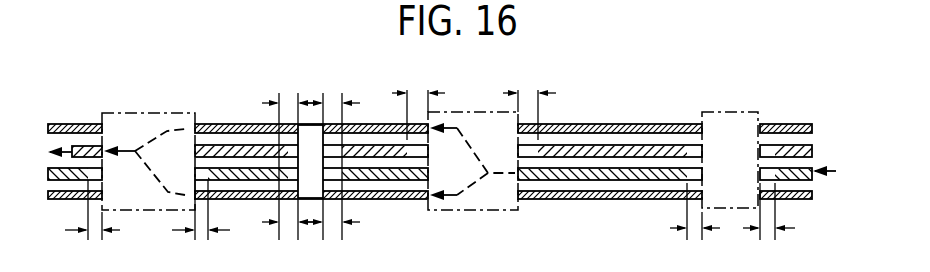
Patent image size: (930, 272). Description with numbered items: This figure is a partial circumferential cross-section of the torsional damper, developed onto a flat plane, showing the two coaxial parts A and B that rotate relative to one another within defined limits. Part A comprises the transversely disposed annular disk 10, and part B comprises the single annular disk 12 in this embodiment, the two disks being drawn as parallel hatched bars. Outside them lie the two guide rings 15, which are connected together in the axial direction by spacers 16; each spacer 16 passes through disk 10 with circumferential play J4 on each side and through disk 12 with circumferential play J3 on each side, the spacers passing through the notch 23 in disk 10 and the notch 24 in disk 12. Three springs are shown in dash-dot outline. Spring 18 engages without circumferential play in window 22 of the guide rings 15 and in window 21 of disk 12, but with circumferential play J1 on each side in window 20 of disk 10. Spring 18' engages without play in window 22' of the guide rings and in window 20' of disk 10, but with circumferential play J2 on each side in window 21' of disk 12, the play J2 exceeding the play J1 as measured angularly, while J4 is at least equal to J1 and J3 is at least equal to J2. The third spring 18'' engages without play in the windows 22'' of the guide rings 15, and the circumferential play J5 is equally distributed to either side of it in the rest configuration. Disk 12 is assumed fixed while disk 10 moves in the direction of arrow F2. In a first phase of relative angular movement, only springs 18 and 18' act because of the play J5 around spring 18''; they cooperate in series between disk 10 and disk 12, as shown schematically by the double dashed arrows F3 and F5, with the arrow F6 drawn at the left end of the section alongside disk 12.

The annular disk 10 is at (640, 171).
The annular disk 12 is at (616, 150).
The guide ring 15 is at (592, 192).
The spacer 16 is at (310, 125).
The spring 18 is at (148, 137).
The spring 18' is at (477, 133).
The third spring 18'' is at (744, 132).
The window 20 is at (243, 136).
The window 20' is at (311, 209).
The window 21 is at (114, 123).
The window 21' is at (378, 127).
The window 22 is at (85, 107).
The window 22' is at (340, 109).
The window 22'' is at (751, 103).
The notch 23 is at (336, 172).
The notch 24 is at (284, 150).
The coaxial part A is at (660, 192).
The coaxial part B is at (674, 136).
The arrow F2 is at (828, 170).
The double dashed arrow F3 is at (466, 176).
The double dashed arrow F5 is at (170, 128).
The force F6 is at (68, 142).
The circumferential play J1 is at (93, 236).
The circumferential play J2 is at (419, 93).
The circumferential play J3 is at (286, 103).
The circumferential play J4 is at (294, 230).
The circumferential play J5 is at (694, 234).